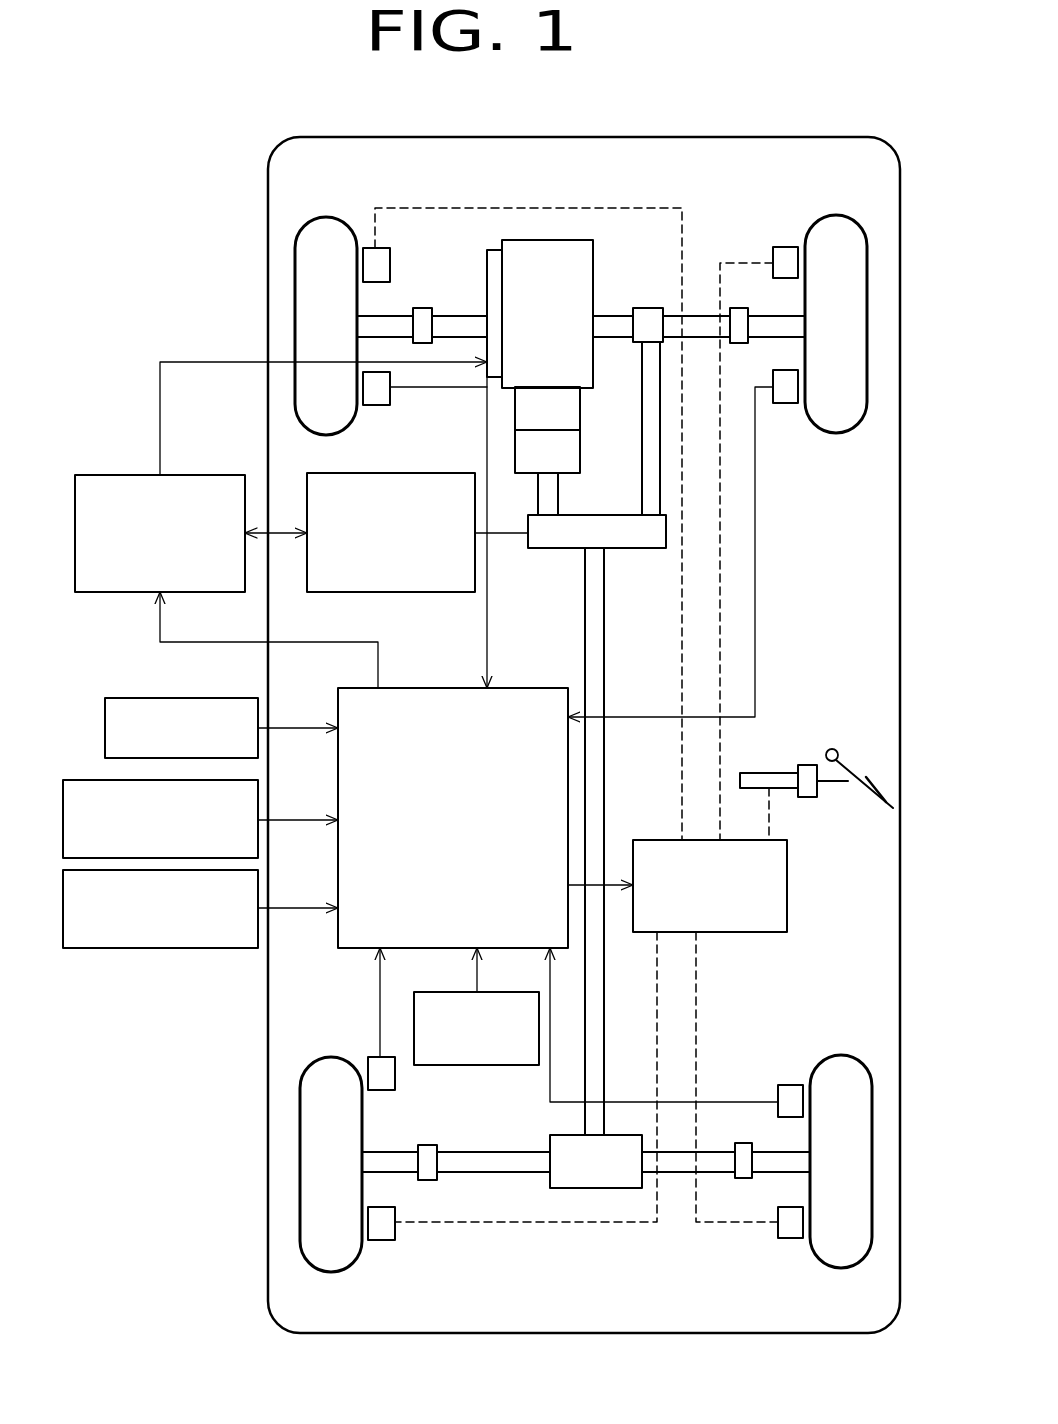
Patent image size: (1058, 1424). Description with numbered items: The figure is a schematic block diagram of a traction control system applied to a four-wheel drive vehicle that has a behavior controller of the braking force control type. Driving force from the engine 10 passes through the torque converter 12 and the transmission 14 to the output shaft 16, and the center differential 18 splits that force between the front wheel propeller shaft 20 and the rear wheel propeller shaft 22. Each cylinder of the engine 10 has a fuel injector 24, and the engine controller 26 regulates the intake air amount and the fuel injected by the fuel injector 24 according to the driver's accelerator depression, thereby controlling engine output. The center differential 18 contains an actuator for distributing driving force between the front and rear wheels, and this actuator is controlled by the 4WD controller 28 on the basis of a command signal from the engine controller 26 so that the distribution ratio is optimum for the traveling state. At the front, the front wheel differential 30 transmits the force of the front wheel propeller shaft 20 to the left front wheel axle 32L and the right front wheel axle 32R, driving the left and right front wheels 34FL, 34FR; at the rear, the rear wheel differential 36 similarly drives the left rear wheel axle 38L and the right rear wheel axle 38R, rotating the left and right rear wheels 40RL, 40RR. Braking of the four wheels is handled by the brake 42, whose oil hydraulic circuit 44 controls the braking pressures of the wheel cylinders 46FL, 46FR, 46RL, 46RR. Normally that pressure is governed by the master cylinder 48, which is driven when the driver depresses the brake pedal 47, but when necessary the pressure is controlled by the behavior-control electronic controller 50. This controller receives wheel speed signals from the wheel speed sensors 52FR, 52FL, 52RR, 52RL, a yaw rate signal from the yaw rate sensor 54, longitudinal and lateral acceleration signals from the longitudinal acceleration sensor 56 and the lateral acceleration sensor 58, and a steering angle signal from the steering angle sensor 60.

The engine 10 is at (547, 314).
The torque converter 12 is at (568, 402).
The transmission 14 is at (568, 450).
The output shaft 16 is at (552, 494).
The center differential 18 is at (638, 548).
The front wheel propeller shaft 20 is at (650, 442).
The rear wheel propeller shaft 22 is at (598, 795).
The fuel injector 24 is at (494, 268).
The engine controller 26 is at (281, 525).
The 4WD controller 28 is at (417, 532).
The front wheel differential 30 is at (648, 312).
The left front wheel axle 32L is at (438, 316).
The right front wheel axle 32R is at (698, 316).
The left front wheel 34FL is at (296, 298).
The right front wheel 34FR is at (862, 420).
The rear wheel differential 36 is at (580, 1184).
The left rear wheel axle 38L is at (482, 1168).
The right rear wheel axle 38R is at (712, 1164).
The left rear wheel 40RL is at (301, 1162).
The right rear wheel 40RR is at (862, 1057).
The brake 42 is at (806, 906).
The oil hydraulic circuit 44 is at (710, 886).
The left front wheel cylinder 46FL is at (450, 246).
The right front wheel cylinder 46FR is at (780, 252).
The left rear wheel cylinder 46RL is at (379, 1232).
The right rear wheel cylinder 46RR is at (785, 1232).
The brake pedal 47 is at (867, 776).
The master cylinder 48 is at (777, 774).
The behavior-control electronic controller 50 is at (485, 662).
The left front wheel speed sensor 52FL is at (380, 398).
The right front wheel speed sensor 52FR is at (794, 392).
The left rear wheel speed sensor 52RL is at (374, 1058).
The right rear wheel speed sensor 52RR is at (790, 1090).
The yaw rate sensor 54 is at (130, 698).
The longitudinal acceleration sensor 56 is at (250, 840).
The lateral acceleration sensor 58 is at (162, 948).
The steering angle sensor 60 is at (475, 1066).